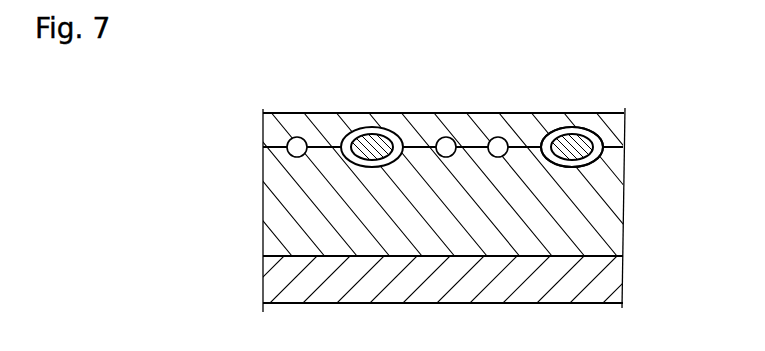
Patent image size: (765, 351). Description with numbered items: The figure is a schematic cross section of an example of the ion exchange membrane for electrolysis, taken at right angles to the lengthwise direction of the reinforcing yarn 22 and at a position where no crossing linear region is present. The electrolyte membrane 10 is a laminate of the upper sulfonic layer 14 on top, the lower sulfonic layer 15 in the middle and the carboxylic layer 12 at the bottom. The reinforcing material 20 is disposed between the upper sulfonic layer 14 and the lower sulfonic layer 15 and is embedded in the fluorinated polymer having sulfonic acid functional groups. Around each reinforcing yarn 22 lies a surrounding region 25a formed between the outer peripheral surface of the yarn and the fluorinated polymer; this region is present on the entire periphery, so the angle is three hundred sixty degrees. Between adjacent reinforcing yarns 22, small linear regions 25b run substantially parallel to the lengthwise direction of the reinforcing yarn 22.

The electrolyte membrane 10 is at (191, 113).
The layer (C) 12 is at (268, 275).
The layer (S-2) 14 is at (263, 137).
The layer (S-1) 15 is at (274, 176).
The reinforcing material 20 is at (587, 128).
The reinforcing yarn 22 is at (359, 143).
The region (p) 25a is at (382, 132).
The linear region (q1) 25b is at (297, 137).